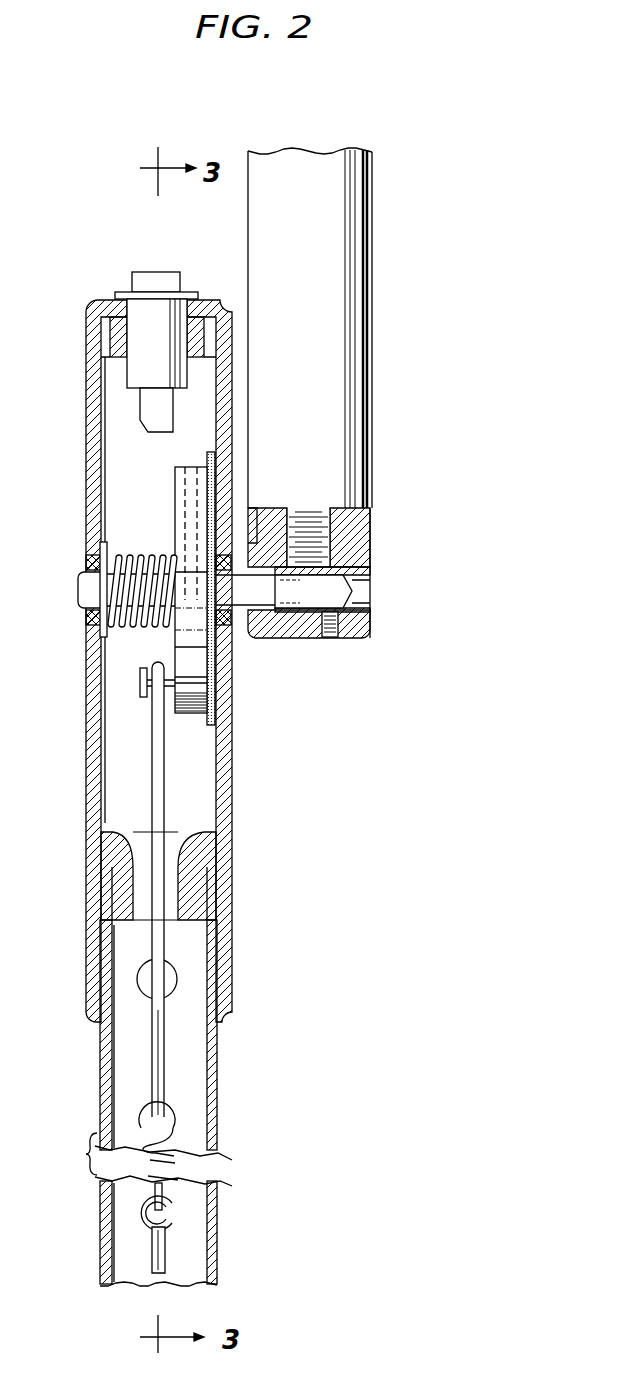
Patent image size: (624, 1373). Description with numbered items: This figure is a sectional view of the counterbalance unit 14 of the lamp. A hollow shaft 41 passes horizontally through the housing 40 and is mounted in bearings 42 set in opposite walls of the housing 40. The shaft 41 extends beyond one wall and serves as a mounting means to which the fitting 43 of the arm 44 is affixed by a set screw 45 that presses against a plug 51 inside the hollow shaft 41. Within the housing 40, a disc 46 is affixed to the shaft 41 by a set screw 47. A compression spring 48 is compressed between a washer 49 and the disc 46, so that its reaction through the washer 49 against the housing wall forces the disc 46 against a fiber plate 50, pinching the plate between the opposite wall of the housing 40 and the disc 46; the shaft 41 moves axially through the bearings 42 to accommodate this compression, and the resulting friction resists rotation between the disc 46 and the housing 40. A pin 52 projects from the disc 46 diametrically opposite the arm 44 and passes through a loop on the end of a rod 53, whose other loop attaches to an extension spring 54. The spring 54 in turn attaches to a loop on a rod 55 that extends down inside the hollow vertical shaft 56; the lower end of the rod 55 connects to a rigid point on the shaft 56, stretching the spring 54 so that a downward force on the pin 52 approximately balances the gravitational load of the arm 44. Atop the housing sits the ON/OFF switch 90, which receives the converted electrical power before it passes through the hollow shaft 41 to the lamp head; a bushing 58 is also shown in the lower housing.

The adjusting mechanism 14 is at (78, 496).
The housing 40 is at (79, 793).
The hollow shaft 41 is at (295, 610).
The bearings 42 is at (85, 620).
The fitting 43 is at (364, 638).
The arm 44 is at (314, 281).
The set screw 45 is at (332, 638).
The disc 46 is at (178, 483).
The set screw 47 is at (188, 527).
The compression spring 48 is at (125, 590).
The washer 49 is at (100, 548).
The fiber plate 50 is at (207, 457).
The plug 51 is at (350, 593).
The pin 52 is at (170, 683).
The rod 53 is at (163, 762).
The extension spring 54 is at (172, 1150).
The rod 55 is at (165, 1257).
The hollow vertical shaft 56 is at (210, 1125).
The bushing 58 is at (195, 897).
The ON/OFF switch 90 is at (137, 272).